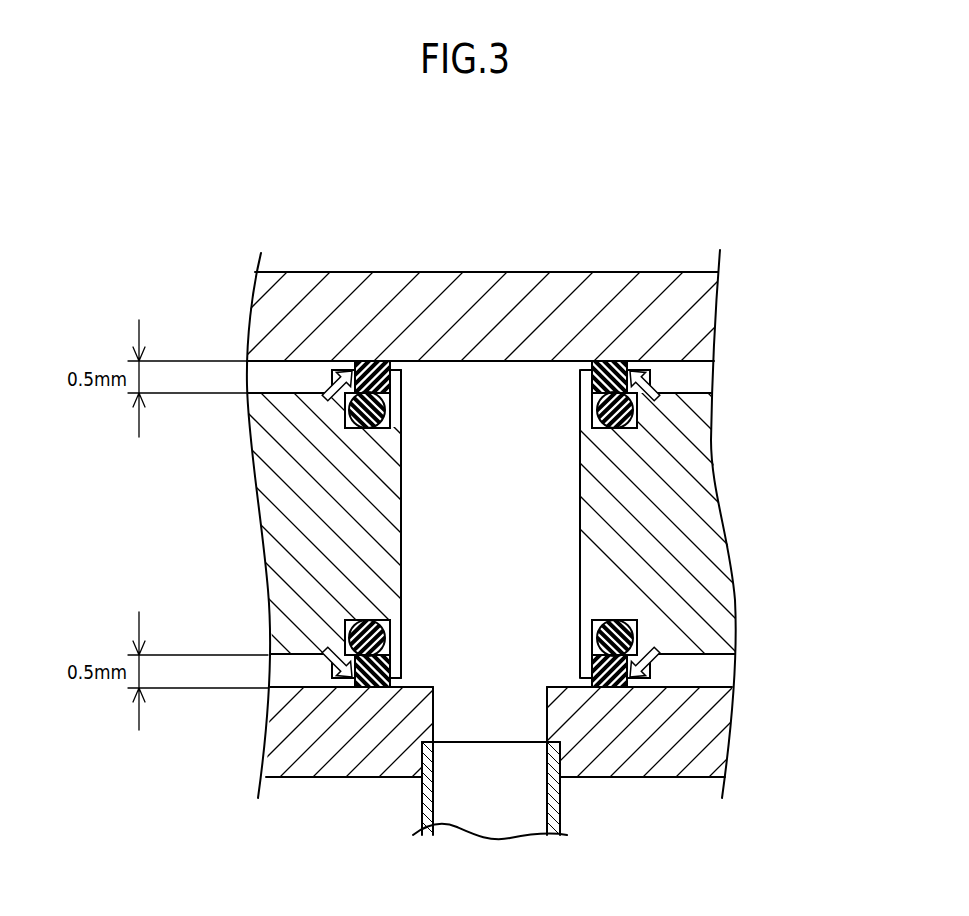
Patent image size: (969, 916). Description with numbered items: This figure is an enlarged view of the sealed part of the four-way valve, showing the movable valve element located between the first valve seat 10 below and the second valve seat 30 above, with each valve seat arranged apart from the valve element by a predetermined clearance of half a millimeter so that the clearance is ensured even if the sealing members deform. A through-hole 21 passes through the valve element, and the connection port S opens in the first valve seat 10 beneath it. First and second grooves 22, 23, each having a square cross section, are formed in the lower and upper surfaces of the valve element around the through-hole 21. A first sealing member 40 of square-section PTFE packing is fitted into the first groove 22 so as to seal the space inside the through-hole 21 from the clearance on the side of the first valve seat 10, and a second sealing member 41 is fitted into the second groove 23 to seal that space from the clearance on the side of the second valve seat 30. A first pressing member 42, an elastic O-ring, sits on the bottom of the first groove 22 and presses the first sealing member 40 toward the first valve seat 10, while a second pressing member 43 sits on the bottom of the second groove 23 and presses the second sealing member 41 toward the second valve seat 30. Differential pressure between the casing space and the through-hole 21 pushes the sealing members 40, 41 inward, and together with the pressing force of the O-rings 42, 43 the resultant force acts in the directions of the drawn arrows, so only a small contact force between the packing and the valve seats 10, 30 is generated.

The first valve seat 10 is at (637, 770).
The second valve seat 30 is at (478, 282).
The through-hole 21 is at (435, 397).
The first groove 22 is at (373, 614).
The second groove 23 is at (370, 423).
The first sealing member 40 is at (650, 670).
The second sealing member 41 is at (601, 366).
The first pressing member 42 is at (625, 624).
The second pressing member 43 is at (617, 413).
The connection port S is at (517, 713).